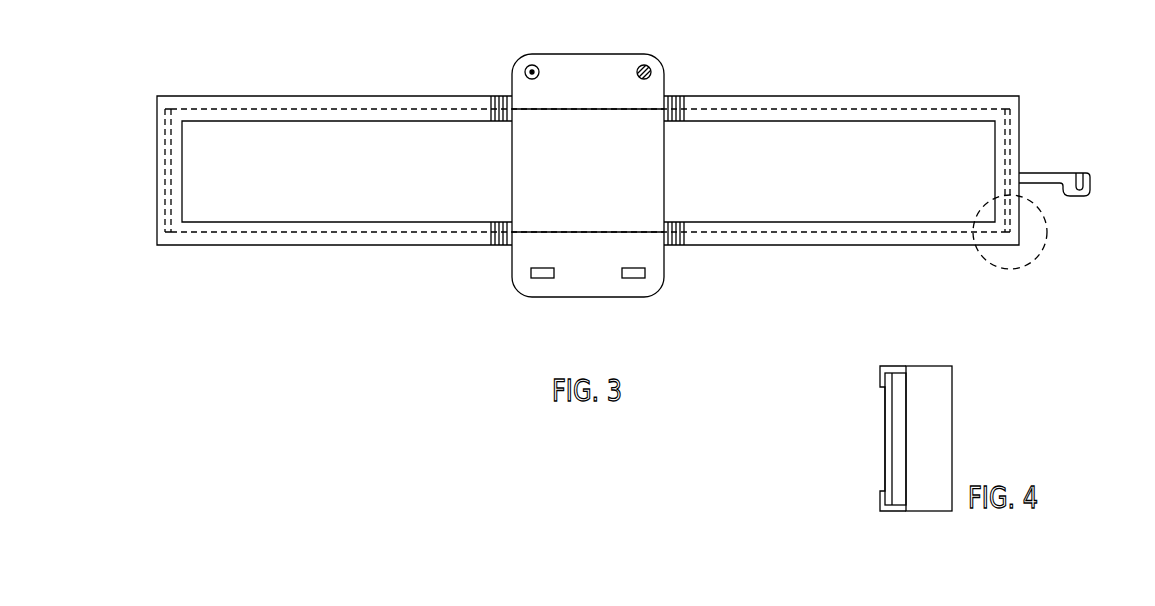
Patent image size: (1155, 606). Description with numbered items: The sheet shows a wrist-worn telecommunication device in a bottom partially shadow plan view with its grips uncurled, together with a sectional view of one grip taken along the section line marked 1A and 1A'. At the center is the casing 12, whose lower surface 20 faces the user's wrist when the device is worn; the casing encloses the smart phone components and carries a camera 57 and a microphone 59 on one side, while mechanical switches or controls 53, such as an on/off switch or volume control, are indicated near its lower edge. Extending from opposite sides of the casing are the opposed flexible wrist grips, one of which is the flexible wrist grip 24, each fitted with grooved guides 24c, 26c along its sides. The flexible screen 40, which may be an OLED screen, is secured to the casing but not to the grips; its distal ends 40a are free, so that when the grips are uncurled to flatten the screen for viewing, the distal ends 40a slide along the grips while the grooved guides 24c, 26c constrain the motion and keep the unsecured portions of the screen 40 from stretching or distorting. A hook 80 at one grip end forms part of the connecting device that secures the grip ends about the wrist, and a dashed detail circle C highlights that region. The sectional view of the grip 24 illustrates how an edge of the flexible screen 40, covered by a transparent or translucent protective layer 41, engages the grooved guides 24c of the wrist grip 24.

In FIG. 3, the casing 12 is at (667, 70).
In FIG. 3, the lower surface 20 is at (588, 148).
In FIG. 4, the flexible wrist grip 24 is at (953, 438).
In FIG. 3, the grooved guide 24c is at (237, 239).
In FIG. 4, the grooved guide 24c is at (880, 375).
In FIG. 3, the grooved guide 26c is at (836, 241).
In FIG. 3, the flexible screen 40 is at (583, 174).
In FIG. 4, the flexible screen 40 is at (900, 457).
In FIG. 3, the distal end 40a is at (170, 137).
In FIG. 4, the protective layer 41 is at (885, 418).
In FIG. 3, the mechanical switches or controls 53 is at (543, 278).
In FIG. 3, the camera 57 is at (531, 63).
In FIG. 3, the microphone 59 is at (645, 63).
In FIG. 3, the hook 80 is at (1040, 171).
In FIG. 3, the section line 1A is at (452, 68).
In FIG. 3, the section line 1A' is at (448, 275).
In FIG. 3, the detail circle C is at (1016, 235).